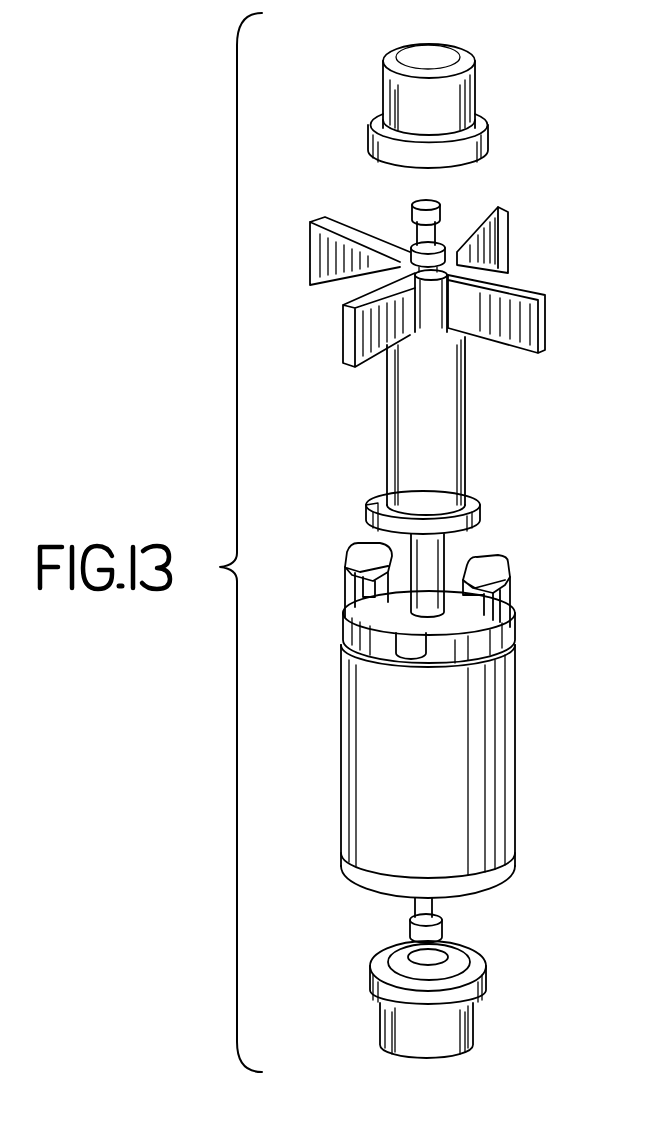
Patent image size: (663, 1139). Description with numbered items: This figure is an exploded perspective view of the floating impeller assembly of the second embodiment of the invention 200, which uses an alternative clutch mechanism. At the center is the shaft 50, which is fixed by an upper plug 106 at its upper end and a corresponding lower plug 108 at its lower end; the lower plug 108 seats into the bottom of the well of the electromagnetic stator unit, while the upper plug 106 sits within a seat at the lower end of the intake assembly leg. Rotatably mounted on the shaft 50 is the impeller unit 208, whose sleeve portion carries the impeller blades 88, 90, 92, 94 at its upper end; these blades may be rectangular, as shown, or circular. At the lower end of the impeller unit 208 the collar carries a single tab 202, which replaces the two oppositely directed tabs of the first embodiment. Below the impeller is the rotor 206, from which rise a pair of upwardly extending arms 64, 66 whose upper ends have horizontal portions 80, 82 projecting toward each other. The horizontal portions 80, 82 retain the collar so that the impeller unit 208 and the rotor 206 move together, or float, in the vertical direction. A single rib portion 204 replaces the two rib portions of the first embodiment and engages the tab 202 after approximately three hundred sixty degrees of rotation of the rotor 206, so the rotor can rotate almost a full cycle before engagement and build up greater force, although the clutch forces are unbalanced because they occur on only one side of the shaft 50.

The second embodiment of the invention 200 is at (321, 870).
The upper plug 106 is at (470, 97).
The shaft 50 is at (444, 238).
The impeller blade 88 is at (333, 223).
The impeller blade 90 is at (507, 238).
The impeller blade 92 is at (343, 346).
The impeller blade 94 is at (517, 343).
The impeller unit 208 is at (460, 437).
The tab 202 is at (370, 510).
The horizontal portion 80 is at (365, 547).
The horizontal portion 82 is at (492, 560).
The arm 64 is at (348, 580).
The arm 66 is at (512, 592).
The rib portion 204 is at (363, 596).
The rotor 206 is at (516, 710).
The lower plug 108 is at (473, 1018).